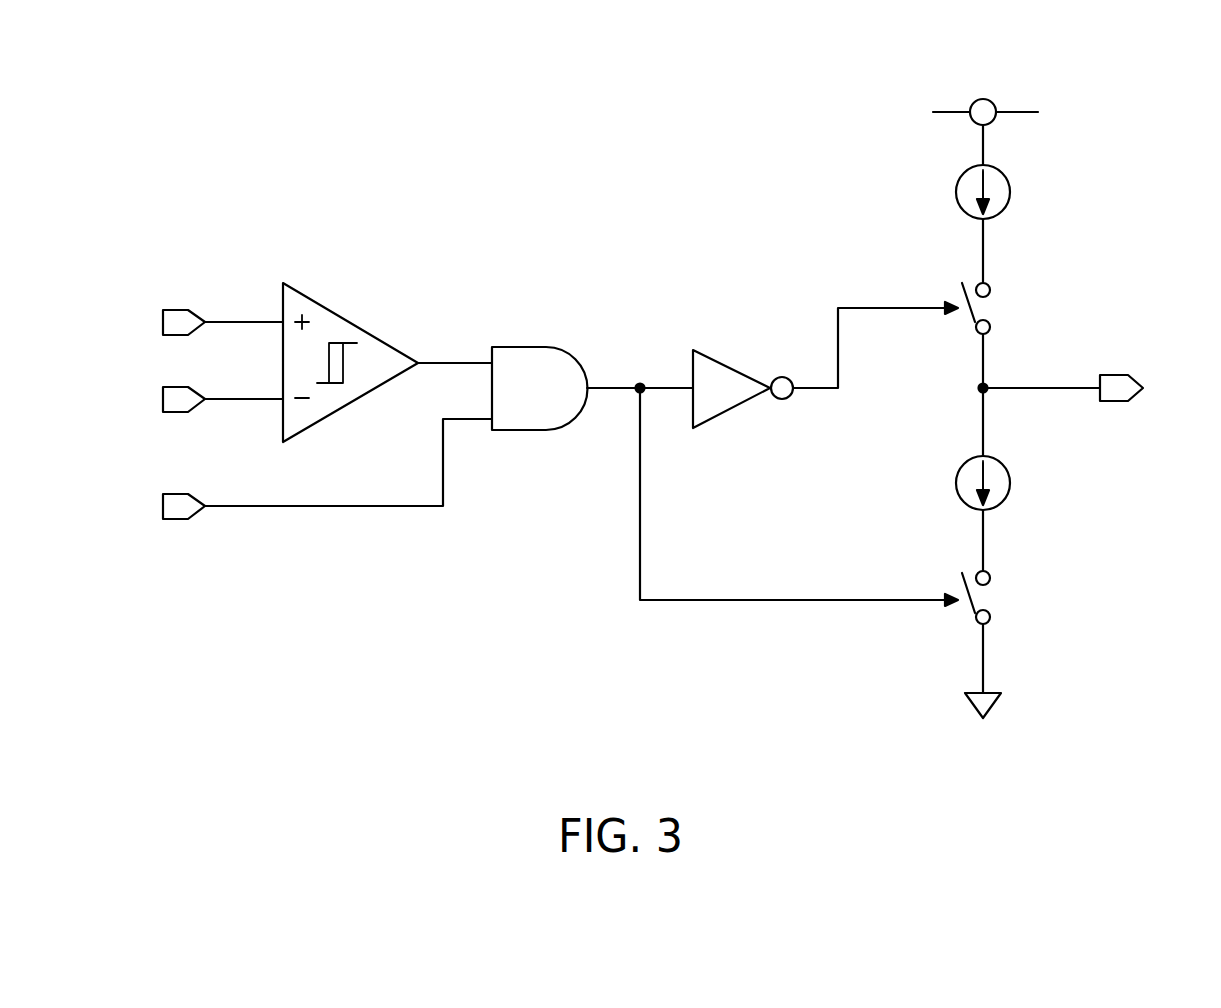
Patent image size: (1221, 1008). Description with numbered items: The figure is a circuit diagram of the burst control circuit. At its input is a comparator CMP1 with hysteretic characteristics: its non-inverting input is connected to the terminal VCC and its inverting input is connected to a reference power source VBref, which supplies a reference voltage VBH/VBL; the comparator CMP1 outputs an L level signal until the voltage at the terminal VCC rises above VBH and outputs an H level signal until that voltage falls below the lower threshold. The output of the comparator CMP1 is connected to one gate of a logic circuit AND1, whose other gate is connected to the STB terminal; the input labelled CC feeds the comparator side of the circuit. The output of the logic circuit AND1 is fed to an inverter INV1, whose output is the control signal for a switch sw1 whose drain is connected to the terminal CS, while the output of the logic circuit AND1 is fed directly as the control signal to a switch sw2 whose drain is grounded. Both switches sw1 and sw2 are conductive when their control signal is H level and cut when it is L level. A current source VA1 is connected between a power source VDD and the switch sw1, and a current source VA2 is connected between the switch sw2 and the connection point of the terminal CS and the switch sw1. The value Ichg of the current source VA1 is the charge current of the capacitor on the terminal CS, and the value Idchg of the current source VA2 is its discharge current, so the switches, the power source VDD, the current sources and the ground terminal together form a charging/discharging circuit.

The comparator CMP1 is at (363, 324).
The logic circuit AND1 is at (533, 342).
The inverter INV1 is at (733, 360).
The current source VA1 is at (951, 224).
The current source VA2 is at (951, 513).
The switch sw1 is at (951, 365).
The switch sw2 is at (952, 629).
The charge control signal input CC is at (221, 300).
The reference power source VBref is at (219, 377).
The terminal VCC is at (190, 321).
The reference voltage VBH is at (187, 400).
The STB terminal STB is at (294, 471).
The power source VDD is at (985, 117).
The terminal CS is at (1078, 390).
The charge current value Ichg is at (1023, 189).
The discharge current value Idchg is at (1028, 481).